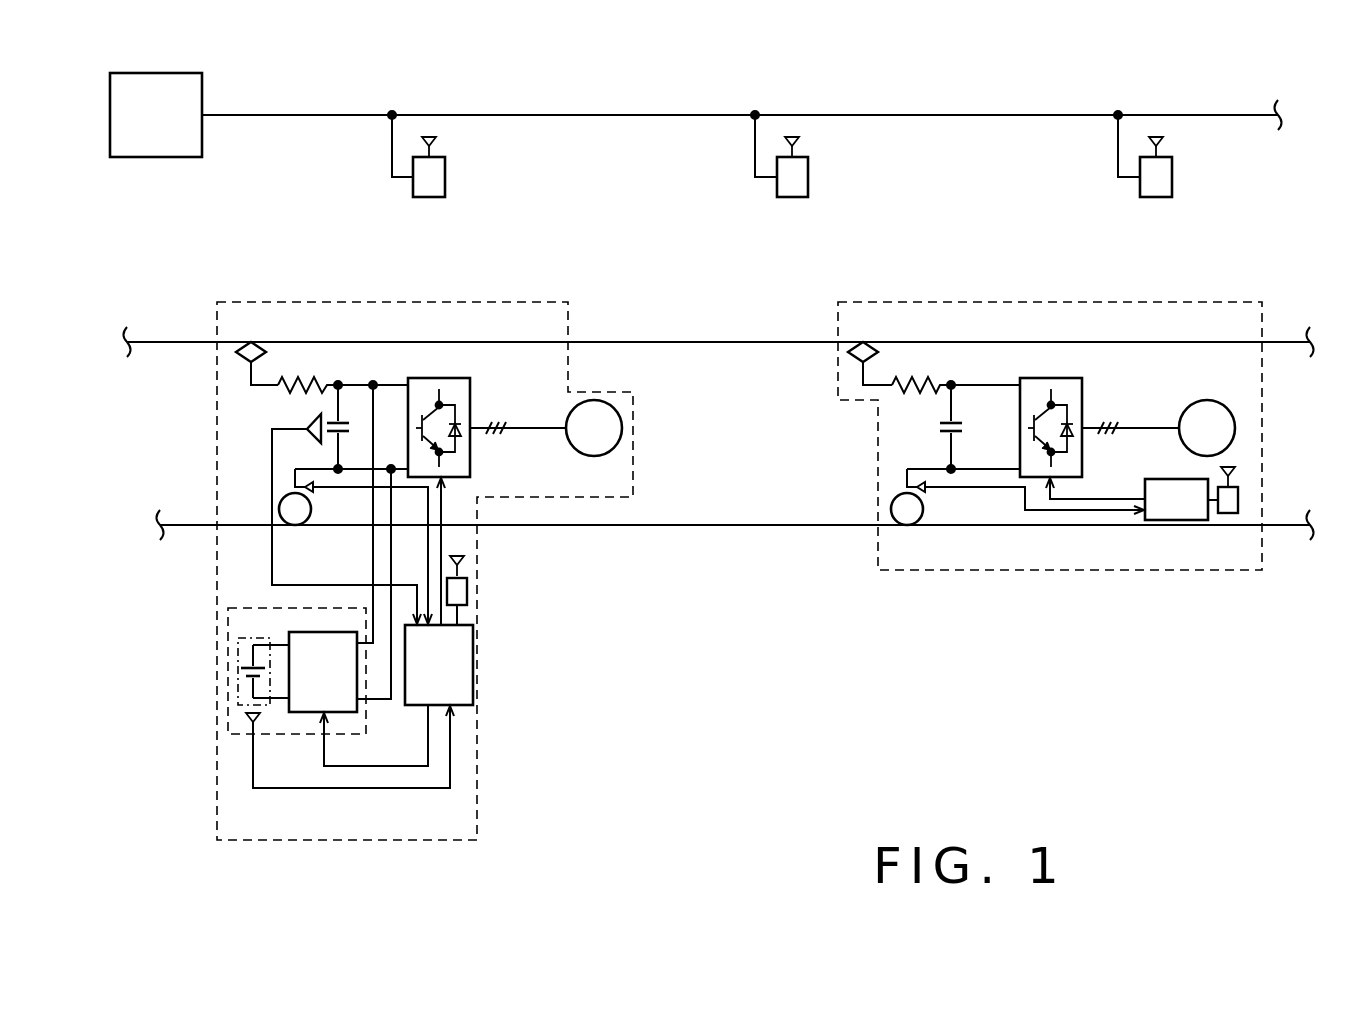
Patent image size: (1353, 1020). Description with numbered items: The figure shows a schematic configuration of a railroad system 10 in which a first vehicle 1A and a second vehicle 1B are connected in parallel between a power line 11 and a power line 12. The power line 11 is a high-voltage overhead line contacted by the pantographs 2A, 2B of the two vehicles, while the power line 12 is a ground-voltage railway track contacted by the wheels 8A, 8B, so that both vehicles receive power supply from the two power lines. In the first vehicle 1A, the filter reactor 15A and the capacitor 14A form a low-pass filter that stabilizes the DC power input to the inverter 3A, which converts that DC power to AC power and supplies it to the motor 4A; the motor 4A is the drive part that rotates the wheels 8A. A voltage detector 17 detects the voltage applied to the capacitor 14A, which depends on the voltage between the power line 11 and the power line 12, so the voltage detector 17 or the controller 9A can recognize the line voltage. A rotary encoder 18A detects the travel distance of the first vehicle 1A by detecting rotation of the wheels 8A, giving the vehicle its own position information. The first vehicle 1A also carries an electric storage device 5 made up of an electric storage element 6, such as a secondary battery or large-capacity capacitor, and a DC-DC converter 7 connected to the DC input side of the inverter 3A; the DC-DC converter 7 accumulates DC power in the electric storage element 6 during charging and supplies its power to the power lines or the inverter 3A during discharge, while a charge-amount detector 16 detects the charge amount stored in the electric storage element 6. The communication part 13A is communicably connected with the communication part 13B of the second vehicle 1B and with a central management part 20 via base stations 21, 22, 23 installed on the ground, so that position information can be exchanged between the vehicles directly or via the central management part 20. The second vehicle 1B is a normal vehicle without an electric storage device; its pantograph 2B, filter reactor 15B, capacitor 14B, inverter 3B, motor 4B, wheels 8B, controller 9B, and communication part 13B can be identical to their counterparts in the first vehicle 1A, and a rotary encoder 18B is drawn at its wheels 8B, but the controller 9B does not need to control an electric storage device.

The railroad system 10 is at (746, 825).
The power line 11 is at (710, 342).
The power line 12 is at (733, 525).
The central management part 20 is at (155, 158).
The base station 21 is at (445, 177).
The base station 22 is at (808, 177).
The base station 23 is at (1172, 177).
The first vehicle 1A is at (401, 302).
The second vehicle 1B is at (1058, 302).
The pantograph 2A is at (251, 342).
The pantograph 2B is at (863, 342).
The filter reactor 15A is at (299, 383).
The filter reactor 15B is at (913, 383).
The capacitor 14A is at (344, 419).
The capacitor 14B is at (957, 419).
The inverter 3A is at (470, 390).
The inverter 3B is at (1082, 390).
The motor 4A is at (594, 400).
The motor 4B is at (1207, 400).
The wheels 8A is at (280, 506).
The wheels 8B is at (923, 507).
The controller 9A is at (473, 665).
The controller 9B is at (1163, 479).
The communication part 13A is at (467, 590).
The communication part 13B is at (1238, 499).
The voltage detector 17 is at (306, 427).
The rotary encoder 18A is at (308, 486).
The current sensor 18B is at (918, 484).
The DC-DC converter 7 is at (324, 632).
The electric storage element 6 is at (238, 662).
The electric storage device 5 is at (366, 718).
The charge-amount detector 16 is at (259, 723).